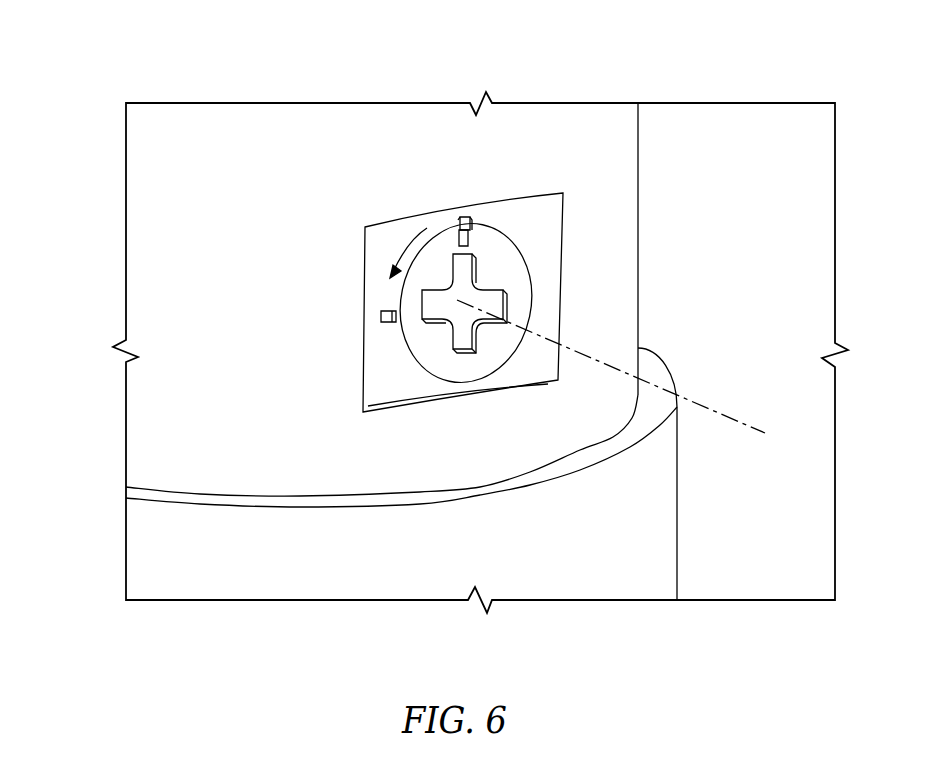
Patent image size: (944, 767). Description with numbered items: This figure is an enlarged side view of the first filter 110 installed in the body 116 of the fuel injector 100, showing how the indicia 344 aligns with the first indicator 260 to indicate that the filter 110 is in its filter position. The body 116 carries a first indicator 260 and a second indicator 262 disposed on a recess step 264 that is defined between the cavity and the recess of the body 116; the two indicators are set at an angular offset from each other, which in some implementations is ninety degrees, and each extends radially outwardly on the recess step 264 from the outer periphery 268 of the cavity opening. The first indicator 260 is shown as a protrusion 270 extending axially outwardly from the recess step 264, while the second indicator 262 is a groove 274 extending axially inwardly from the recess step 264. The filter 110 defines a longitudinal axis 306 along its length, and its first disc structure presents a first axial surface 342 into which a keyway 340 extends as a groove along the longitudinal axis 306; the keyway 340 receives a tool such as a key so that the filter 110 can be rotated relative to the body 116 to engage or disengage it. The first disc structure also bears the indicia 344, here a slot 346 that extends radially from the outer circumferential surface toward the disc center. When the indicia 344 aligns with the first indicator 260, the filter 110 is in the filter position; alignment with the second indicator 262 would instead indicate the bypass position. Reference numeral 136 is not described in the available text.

The fuel injector 100 is at (160, 421).
The first filter 110 is at (440, 364).
The body 116 is at (622, 118).
The housing surface 136 is at (610, 157).
The first indicator 260 is at (470, 221).
The second indicator 262 is at (388, 310).
The recess step 264 is at (549, 263).
The outer periphery 268 is at (503, 294).
The protrusion 270 is at (462, 218).
The groove 274 is at (383, 314).
The longitudinal axis 306 is at (757, 430).
The keyway 340 is at (490, 316).
The first axial surface 342 is at (492, 355).
The indicia 344 is at (468, 244).
The slot 346 is at (470, 224).